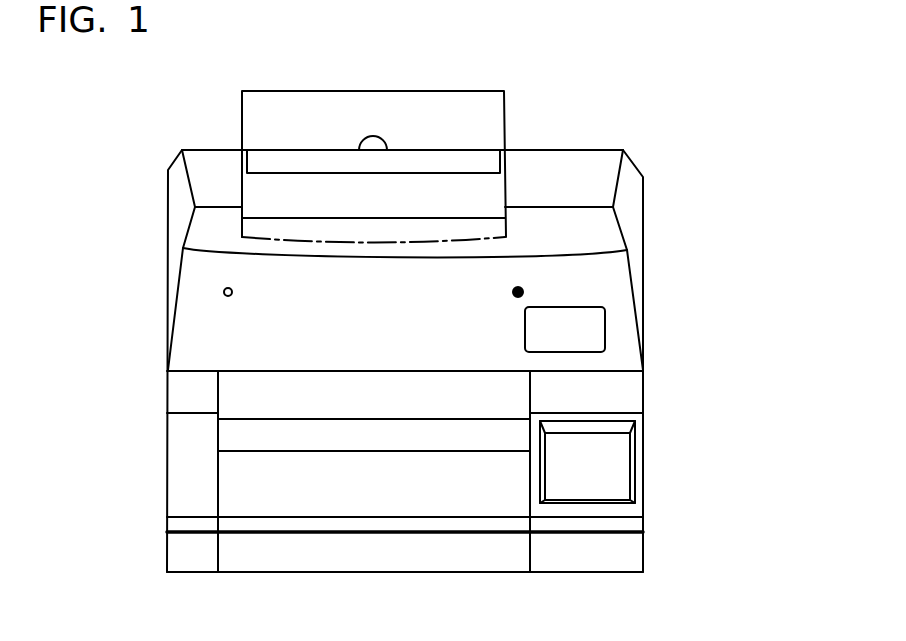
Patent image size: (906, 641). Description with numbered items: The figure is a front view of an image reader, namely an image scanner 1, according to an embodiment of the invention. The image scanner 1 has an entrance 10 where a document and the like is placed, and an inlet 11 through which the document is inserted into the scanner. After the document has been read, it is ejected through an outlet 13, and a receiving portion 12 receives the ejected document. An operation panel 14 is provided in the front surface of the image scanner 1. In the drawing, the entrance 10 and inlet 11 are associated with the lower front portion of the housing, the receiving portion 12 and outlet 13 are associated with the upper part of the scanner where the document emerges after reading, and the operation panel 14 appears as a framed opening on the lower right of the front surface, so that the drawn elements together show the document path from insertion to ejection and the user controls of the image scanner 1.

The image scanner 1 is at (687, 140).
The entrance 10 is at (275, 402).
The inlet 11 is at (265, 378).
The receiving portion 12 is at (478, 187).
The outlet 13 is at (497, 115).
The operation panel 14 is at (617, 465).